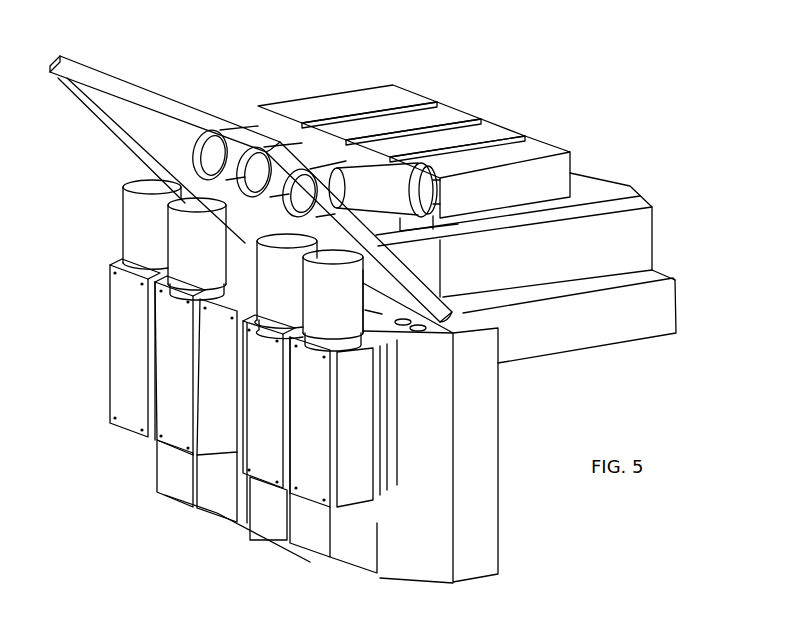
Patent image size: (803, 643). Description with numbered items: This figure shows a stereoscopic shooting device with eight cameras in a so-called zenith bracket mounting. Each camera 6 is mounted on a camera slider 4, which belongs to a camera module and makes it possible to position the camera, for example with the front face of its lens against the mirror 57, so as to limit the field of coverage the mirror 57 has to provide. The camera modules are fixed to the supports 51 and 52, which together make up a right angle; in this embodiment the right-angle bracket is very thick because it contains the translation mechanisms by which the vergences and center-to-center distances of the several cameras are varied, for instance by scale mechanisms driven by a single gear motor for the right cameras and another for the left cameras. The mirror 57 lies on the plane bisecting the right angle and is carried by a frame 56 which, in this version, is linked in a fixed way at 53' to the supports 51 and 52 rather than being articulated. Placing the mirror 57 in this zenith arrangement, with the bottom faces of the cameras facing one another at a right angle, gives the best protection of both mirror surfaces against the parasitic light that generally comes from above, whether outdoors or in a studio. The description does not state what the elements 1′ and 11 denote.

The processing module 1′ is at (540, 140).
The camera slider 4 is at (600, 180).
The camera 6 is at (348, 100).
The support block 11 is at (637, 233).
The support 51 is at (480, 460).
The support 52 is at (617, 322).
The fixed link 53' is at (500, 359).
The frame 56 is at (150, 98).
The mirror 57 is at (170, 135).